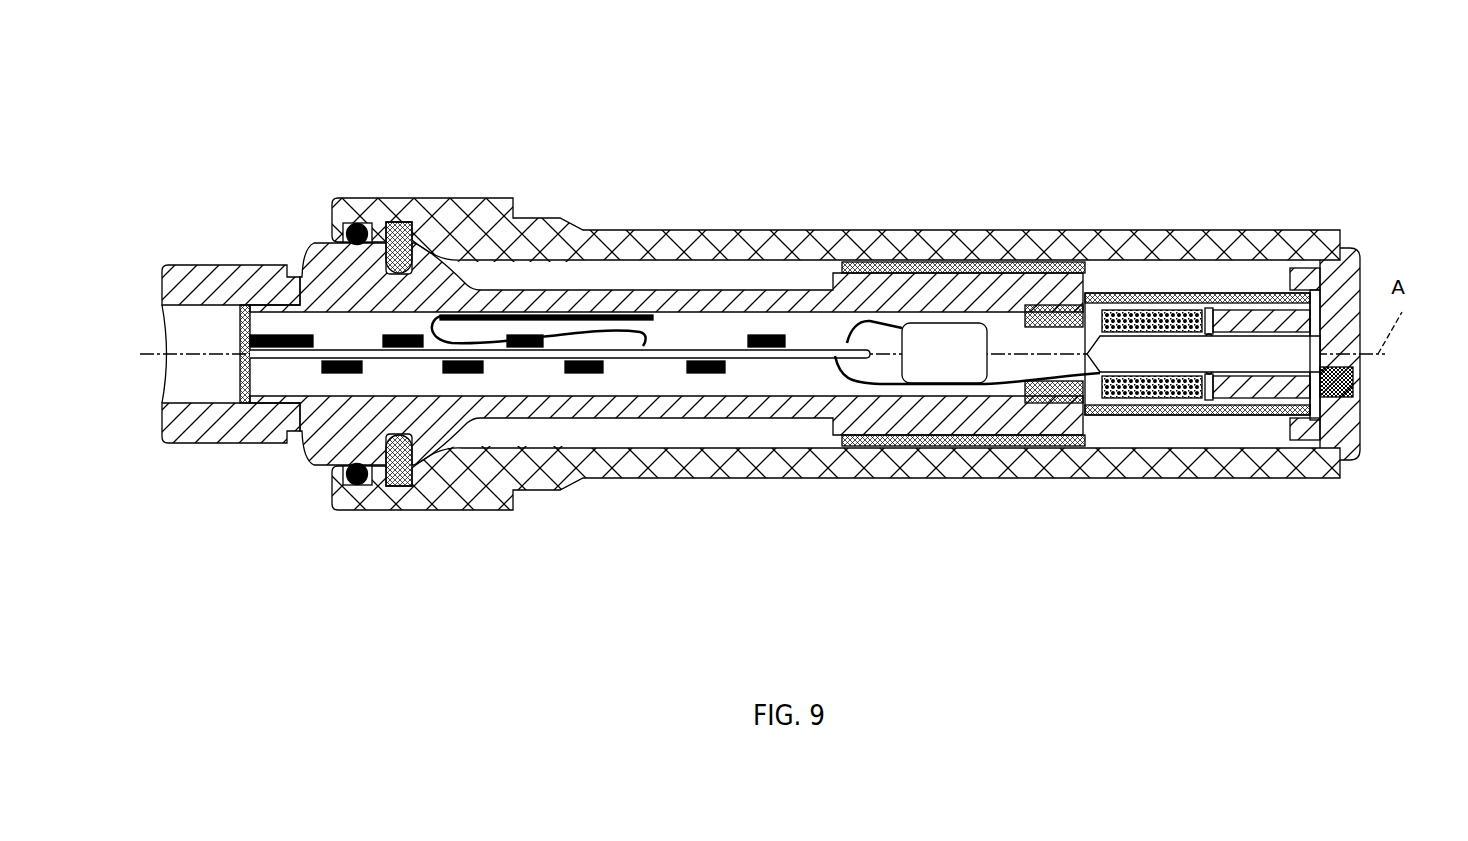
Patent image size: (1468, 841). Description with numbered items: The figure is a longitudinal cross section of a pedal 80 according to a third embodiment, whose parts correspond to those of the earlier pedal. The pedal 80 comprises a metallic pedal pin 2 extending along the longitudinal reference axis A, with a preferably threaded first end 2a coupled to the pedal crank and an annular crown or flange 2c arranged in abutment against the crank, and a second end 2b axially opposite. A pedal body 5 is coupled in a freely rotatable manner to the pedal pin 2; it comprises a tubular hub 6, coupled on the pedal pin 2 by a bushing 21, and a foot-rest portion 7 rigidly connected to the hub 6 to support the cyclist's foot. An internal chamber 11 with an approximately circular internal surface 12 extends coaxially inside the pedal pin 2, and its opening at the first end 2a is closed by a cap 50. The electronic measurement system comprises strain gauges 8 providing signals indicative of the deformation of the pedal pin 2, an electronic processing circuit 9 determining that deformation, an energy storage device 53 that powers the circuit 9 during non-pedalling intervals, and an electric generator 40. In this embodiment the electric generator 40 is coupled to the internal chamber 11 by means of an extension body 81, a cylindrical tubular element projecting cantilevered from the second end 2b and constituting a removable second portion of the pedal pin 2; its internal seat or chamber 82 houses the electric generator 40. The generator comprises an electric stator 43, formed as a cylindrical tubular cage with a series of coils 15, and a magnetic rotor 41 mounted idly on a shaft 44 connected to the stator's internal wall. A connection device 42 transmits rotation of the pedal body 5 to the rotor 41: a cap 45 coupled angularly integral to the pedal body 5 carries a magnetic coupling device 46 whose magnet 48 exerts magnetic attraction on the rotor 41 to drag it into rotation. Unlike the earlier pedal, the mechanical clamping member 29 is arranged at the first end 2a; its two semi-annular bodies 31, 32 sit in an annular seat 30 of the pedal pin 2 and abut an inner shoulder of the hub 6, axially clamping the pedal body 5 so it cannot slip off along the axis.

The pedal pin 2 is at (218, 428).
The first end 2a is at (212, 258).
The second end 2b is at (1042, 249).
The annular crown or flange 2c is at (309, 243).
The pedal body 5 is at (636, 226).
The hub 6 is at (861, 227).
The foot-rest portion 7 is at (732, 226).
The strain gauges 8 is at (644, 309).
The electronic processing circuit 9 is at (607, 364).
The internal chamber 11 is at (757, 378).
The internal surface 12 is at (651, 386).
The coils 15 is at (1159, 387).
The bushing 21 is at (921, 259).
The mechanical clamping member 29 is at (450, 186).
The annular seat 30 is at (406, 440).
The semi-annular body 31 is at (399, 216).
The semi-annular body 32 is at (396, 470).
The electric generator 40 is at (1191, 282).
The magnetic rotor 41 is at (1257, 391).
The connection device 42 is at (1334, 407).
The electric stator 43 is at (1132, 403).
The shaft 44 is at (1171, 335).
The cap 45 is at (1351, 298).
The magnetic coupling device 46 is at (1314, 370).
The magnet 48 is at (1354, 387).
The cap 50 is at (242, 345).
The energy storage device 53 is at (950, 319).
The pedal 80 is at (312, 494).
The extension body 81 is at (1076, 287).
The internal seat or chamber 82 is at (1210, 370).